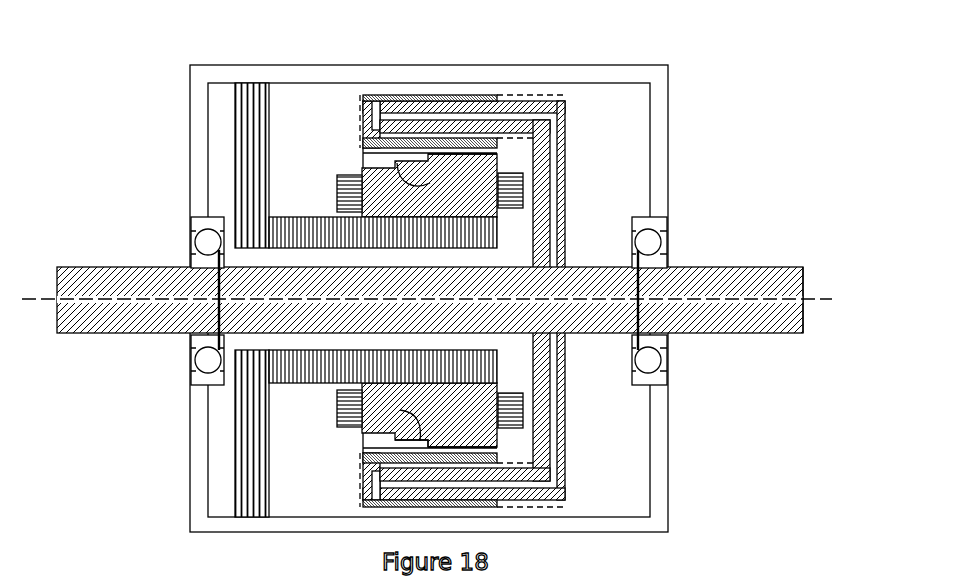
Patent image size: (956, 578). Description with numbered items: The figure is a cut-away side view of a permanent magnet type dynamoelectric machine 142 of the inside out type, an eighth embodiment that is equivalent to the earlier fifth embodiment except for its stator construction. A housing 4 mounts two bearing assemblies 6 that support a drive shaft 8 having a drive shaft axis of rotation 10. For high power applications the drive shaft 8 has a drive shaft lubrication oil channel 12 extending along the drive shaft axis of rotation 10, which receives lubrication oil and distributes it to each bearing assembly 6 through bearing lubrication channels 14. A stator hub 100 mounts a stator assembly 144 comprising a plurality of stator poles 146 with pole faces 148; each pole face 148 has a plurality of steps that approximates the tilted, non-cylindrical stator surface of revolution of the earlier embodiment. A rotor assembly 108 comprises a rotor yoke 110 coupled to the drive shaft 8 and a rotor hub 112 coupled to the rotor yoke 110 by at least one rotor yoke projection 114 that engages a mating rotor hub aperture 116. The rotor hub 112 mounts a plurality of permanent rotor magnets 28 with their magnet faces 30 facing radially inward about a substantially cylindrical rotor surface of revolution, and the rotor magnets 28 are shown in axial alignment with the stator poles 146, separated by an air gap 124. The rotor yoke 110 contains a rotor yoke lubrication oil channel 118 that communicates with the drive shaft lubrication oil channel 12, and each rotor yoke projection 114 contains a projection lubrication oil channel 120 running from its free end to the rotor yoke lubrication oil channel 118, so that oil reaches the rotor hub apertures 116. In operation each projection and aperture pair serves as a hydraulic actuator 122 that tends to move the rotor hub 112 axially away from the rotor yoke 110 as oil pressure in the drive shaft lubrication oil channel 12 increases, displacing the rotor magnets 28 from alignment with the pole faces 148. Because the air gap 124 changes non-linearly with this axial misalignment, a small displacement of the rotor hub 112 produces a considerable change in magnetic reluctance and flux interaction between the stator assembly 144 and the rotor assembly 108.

The dynamoelectric machine 142 is at (121, 132).
The housing 4 is at (617, 84).
The bearing assembly 6 is at (190, 226).
The drive shaft 8 is at (735, 267).
The drive shaft axis of rotation 10 is at (40, 299).
The drive shaft lubrication oil channel 12 is at (805, 299).
The bearing lubrication channel 14 is at (222, 258).
The permanent rotor magnet 28 is at (497, 145).
The magnet face 30 is at (456, 153).
The stator hub 100 is at (270, 466).
The rotor assembly 108 is at (569, 455).
The rotor yoke 110 is at (567, 117).
The rotor hub 112 is at (373, 92).
The rotor yoke projection 114 is at (360, 493).
The rotor hub aperture 116 is at (421, 442).
The rotor yoke lubrication oil channel 118 is at (563, 163).
The projection lubrication oil channel 120 is at (517, 100).
The hydraulic actuator 122 is at (433, 95).
The air gap 124 is at (419, 302).
The stator assembly 144 is at (359, 151).
The stator pole 146 is at (362, 210).
The pole face 148 is at (380, 165).